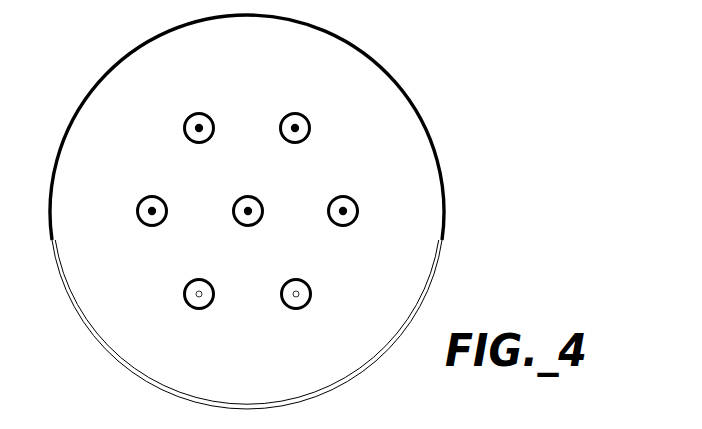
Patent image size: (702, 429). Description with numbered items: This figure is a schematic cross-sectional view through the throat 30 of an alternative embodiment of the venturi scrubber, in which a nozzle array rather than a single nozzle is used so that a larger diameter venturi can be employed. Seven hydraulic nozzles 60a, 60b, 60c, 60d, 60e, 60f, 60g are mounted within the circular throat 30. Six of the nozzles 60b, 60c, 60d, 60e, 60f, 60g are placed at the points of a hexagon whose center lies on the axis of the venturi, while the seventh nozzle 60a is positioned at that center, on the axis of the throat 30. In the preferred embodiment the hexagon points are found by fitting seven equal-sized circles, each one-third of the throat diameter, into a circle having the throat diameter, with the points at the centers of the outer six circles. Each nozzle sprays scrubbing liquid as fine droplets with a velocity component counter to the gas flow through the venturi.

The throat 30 is at (86, 97).
The nozzle 60a is at (256, 203).
The nozzle 60b is at (160, 203).
The nozzle 60c is at (207, 120).
The nozzle 60d is at (303, 120).
The nozzle 60e is at (351, 203).
The nozzle 60f is at (305, 293).
The nozzle 60g is at (208, 293).